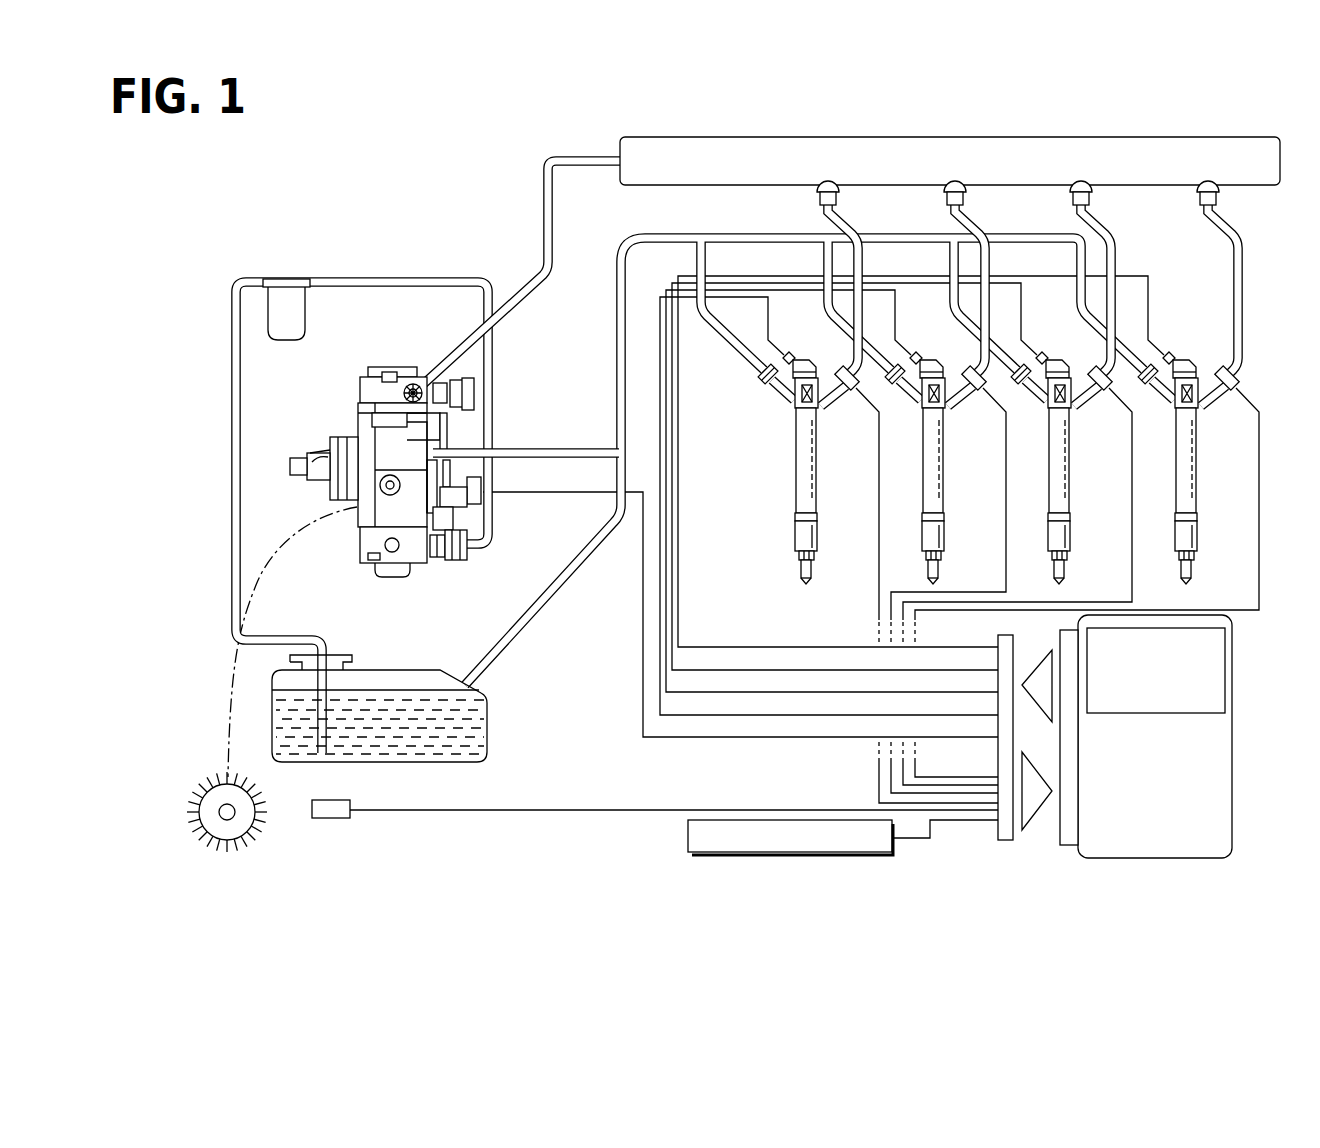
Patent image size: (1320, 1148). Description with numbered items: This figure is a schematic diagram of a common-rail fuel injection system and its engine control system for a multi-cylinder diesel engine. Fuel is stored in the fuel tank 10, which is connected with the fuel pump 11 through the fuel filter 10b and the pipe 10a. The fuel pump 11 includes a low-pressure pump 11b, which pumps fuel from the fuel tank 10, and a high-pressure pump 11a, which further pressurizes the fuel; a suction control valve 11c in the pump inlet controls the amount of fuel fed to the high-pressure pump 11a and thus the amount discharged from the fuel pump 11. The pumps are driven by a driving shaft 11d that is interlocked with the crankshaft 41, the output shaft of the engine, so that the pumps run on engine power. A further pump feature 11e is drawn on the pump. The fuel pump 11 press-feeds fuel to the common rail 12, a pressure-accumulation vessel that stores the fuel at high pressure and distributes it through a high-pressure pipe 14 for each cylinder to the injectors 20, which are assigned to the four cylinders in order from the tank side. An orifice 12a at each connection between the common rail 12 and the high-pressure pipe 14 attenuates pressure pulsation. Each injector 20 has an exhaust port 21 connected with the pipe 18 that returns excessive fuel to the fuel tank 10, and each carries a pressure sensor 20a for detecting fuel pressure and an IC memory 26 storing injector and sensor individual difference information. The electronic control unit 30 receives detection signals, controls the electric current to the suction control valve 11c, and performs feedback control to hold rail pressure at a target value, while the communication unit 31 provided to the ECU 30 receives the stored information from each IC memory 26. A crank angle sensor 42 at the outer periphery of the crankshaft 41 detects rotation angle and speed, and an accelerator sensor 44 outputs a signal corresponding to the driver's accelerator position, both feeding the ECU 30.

The fuel tank 10 is at (410, 668).
The pipe 10a is at (232, 455).
The fuel filter 10b is at (304, 307).
The fuel pump 11 is at (413, 440).
The high-pressure pump 11a is at (385, 368).
The low-pressure pump 11b is at (438, 478).
The suction control valve 11c is at (484, 483).
The driving shaft 11d is at (302, 462).
The fuel discharge port 11e is at (414, 382).
The common rail 12 is at (1028, 150).
The orifice 12a is at (837, 198).
The high-pressure pipe 14 is at (861, 262).
The pipe 18 is at (675, 238).
The injector 20 is at (817, 455).
The pressure sensor 20a is at (837, 367).
The exhaust port 21 is at (761, 386).
The IC memory 26 is at (793, 409).
The electronic control unit (ECU) 30 is at (1146, 736).
The communication unit 31 is at (1227, 659).
The crankshaft 41 is at (224, 823).
The crank angle sensor 42 is at (333, 820).
The accelerator sensor 44 is at (758, 856).